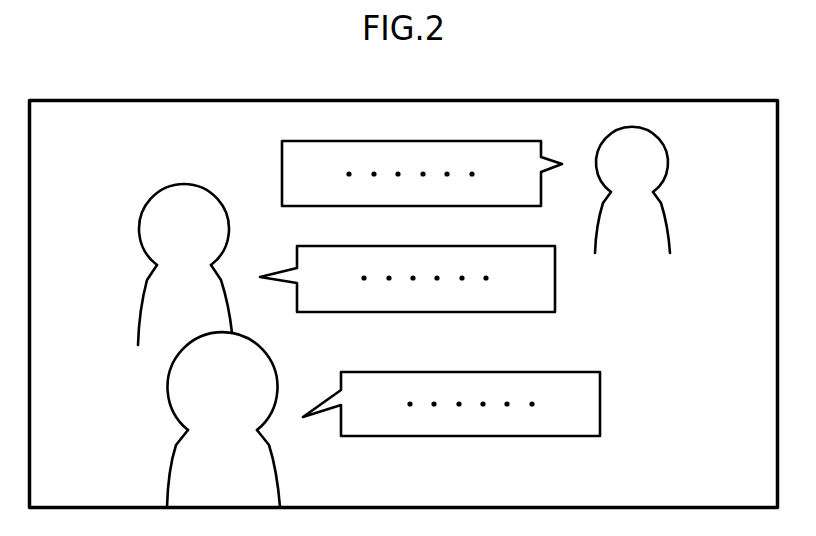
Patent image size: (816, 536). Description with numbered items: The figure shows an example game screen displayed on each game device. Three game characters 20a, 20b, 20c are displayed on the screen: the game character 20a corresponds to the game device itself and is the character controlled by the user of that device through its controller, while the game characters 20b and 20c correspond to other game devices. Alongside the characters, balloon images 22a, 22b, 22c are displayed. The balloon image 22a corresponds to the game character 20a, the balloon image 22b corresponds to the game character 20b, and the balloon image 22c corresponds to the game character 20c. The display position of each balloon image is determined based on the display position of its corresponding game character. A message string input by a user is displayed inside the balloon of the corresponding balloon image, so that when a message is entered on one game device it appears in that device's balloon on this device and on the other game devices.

The game character 20a is at (175, 472).
The game character 20b is at (143, 300).
The game character 20c is at (667, 226).
The balloon image 22a is at (600, 403).
The balloon image 22b is at (493, 312).
The balloon image 22c is at (282, 173).